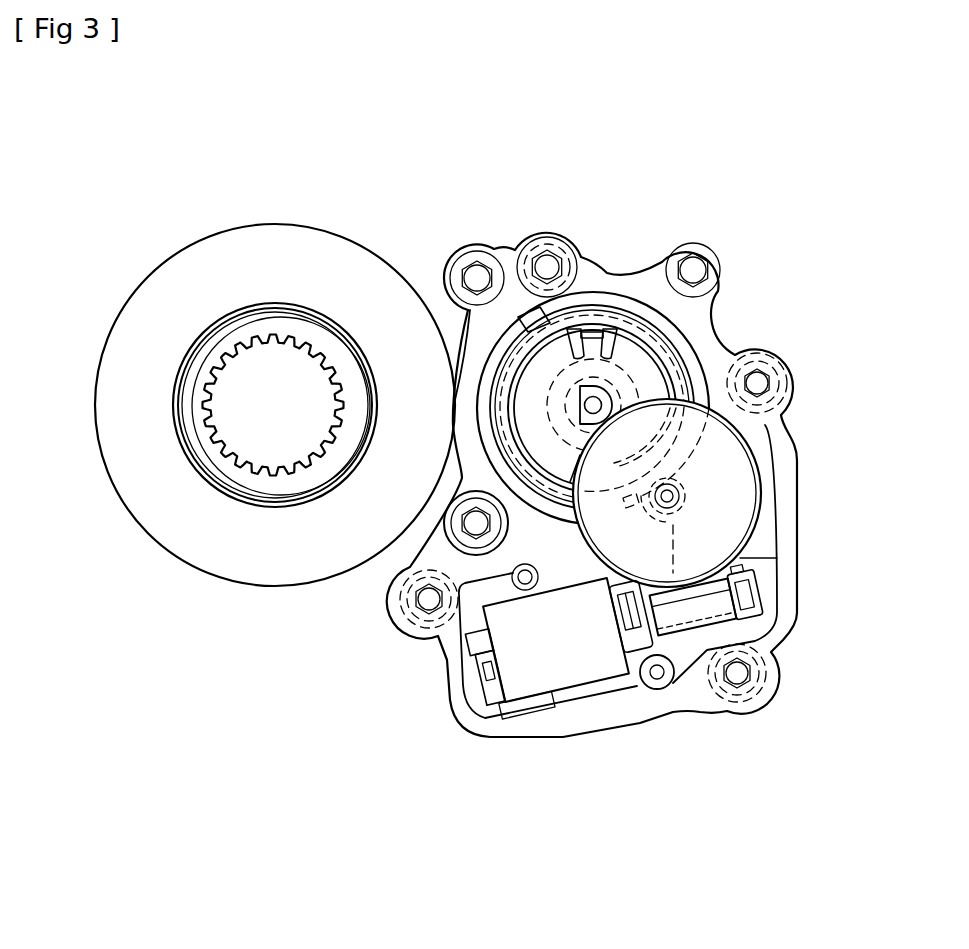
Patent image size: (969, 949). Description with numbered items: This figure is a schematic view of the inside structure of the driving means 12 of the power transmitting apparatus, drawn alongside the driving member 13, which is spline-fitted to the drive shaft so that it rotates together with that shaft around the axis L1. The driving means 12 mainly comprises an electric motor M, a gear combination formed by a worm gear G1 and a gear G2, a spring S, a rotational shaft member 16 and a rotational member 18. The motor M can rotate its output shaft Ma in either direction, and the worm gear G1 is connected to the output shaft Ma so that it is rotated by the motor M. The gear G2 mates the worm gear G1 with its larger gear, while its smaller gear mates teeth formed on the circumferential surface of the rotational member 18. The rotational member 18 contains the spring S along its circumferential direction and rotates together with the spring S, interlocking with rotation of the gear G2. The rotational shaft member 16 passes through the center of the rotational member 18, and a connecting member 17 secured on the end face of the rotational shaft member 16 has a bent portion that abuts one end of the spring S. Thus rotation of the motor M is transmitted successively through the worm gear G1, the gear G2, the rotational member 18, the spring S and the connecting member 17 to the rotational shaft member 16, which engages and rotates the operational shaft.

The driving means 12 is at (809, 291).
The driving member 13 is at (218, 331).
The axis L1 is at (274, 405).
The rotational shaft member 16 is at (593, 408).
The connecting member 17 is at (637, 346).
The rotational member 18 is at (596, 318).
The spring S is at (715, 339).
The gear G2 is at (750, 484).
The worm gear G1 is at (723, 618).
The electric motor M is at (582, 678).
The output shaft Ma is at (657, 690).